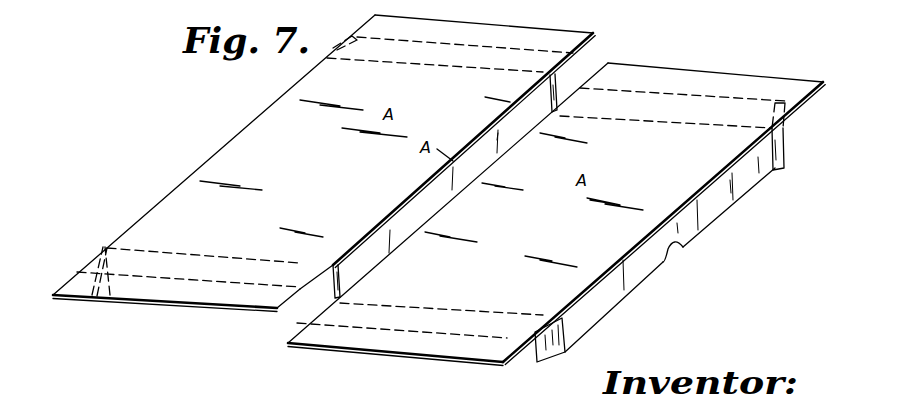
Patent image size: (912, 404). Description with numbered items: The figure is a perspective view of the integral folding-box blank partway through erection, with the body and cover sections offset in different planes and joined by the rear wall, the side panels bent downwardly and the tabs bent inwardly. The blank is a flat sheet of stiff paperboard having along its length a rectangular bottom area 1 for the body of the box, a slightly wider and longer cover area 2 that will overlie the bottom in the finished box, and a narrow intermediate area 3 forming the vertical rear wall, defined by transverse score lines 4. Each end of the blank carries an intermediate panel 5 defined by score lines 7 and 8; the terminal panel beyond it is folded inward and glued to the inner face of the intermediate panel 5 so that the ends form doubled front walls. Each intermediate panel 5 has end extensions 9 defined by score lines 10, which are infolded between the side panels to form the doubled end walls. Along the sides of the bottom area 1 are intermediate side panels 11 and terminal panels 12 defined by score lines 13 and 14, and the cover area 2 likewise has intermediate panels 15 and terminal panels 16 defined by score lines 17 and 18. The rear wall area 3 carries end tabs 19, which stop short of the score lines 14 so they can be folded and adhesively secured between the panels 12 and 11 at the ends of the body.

The rectangular bottom area 1 is at (178, 213).
The cover area 2 is at (665, 190).
The intermediate area 3 is at (511, 137).
The score lines 4 is at (483, 168).
The intermediate panels 5 is at (640, 282).
The score line 7 is at (239, 133).
The score line 8 is at (701, 232).
The end extensions 9 is at (362, 49).
The score lines 10 is at (553, 93).
The intermediate side panels 11 is at (182, 266).
The terminal panels 12 is at (522, 32).
The score lines 13 is at (468, 70).
The score lines 14 is at (463, 48).
The intermediate panels 15 is at (742, 112).
The terminal panels 16 is at (688, 72).
The score lines 17 is at (673, 126).
The score lines 18 is at (717, 95).
The end tabs 19 is at (577, 62).